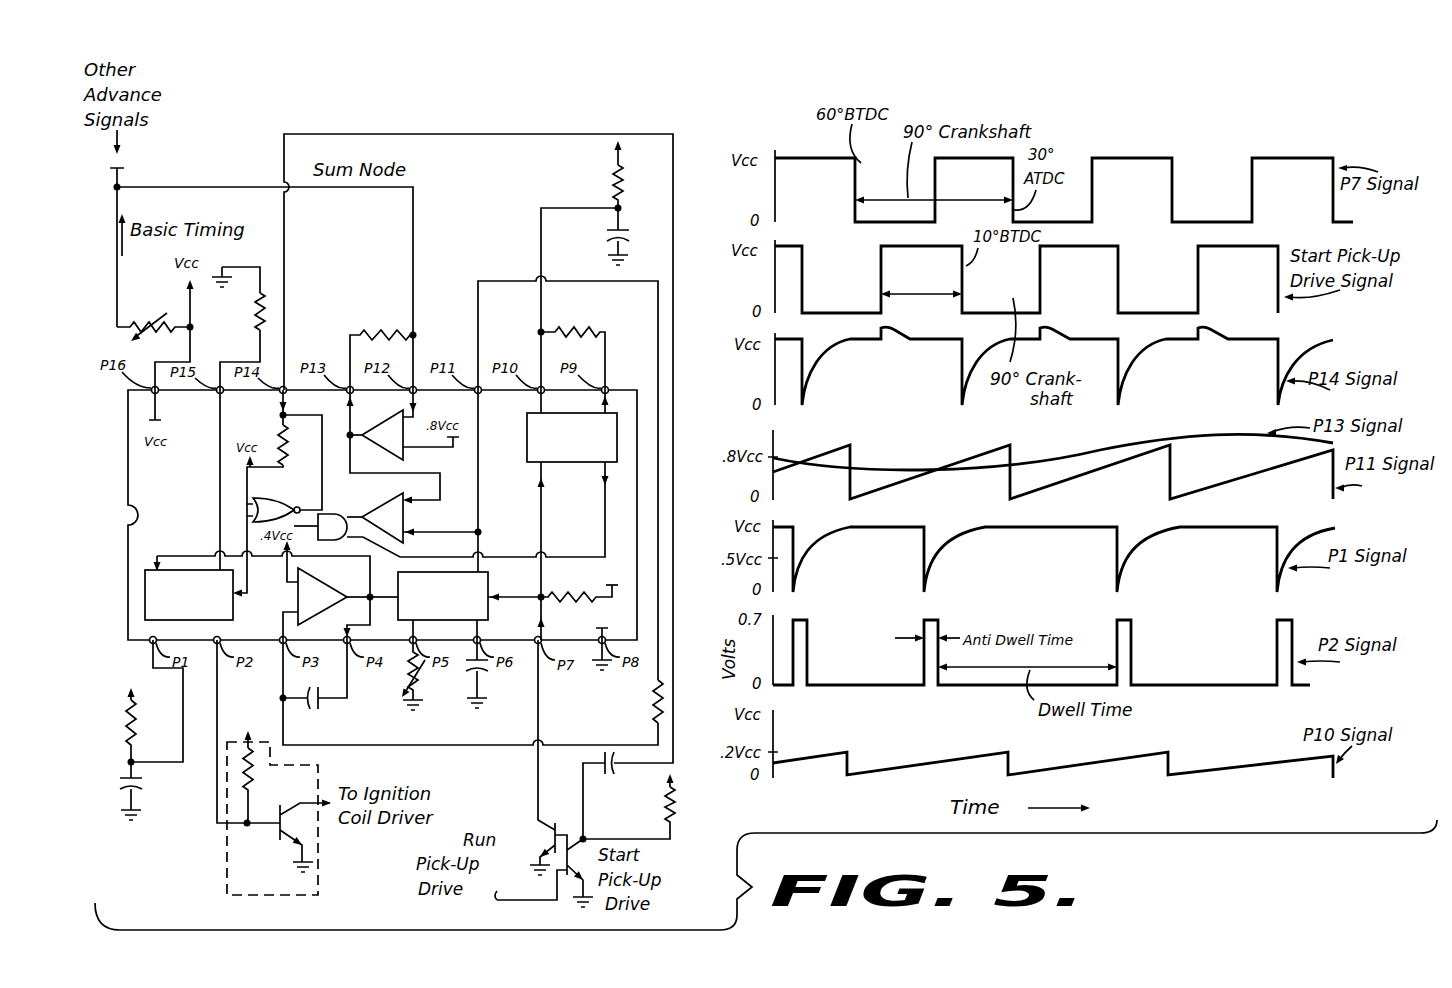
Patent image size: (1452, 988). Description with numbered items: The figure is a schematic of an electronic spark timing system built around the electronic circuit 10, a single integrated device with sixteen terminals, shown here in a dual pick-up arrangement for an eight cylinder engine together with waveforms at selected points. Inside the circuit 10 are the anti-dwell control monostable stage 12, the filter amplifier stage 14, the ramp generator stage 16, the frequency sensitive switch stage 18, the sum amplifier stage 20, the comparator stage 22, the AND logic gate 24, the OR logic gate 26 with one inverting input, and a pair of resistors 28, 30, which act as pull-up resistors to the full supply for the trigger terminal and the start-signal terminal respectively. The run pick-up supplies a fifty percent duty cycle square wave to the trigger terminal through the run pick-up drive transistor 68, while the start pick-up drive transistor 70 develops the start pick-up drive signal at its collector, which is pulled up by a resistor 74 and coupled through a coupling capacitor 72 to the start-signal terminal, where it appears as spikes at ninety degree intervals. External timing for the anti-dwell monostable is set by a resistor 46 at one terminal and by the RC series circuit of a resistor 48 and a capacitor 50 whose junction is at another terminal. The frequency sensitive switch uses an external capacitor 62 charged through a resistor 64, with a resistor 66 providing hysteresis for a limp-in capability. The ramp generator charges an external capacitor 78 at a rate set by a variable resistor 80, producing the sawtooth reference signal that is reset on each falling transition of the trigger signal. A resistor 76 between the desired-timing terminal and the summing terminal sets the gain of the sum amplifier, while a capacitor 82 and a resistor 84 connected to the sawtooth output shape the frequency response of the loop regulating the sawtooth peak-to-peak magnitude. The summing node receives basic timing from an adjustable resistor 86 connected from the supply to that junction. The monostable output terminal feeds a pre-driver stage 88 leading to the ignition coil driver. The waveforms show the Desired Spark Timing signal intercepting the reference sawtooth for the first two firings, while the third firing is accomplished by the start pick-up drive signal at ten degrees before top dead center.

The electronic circuit 10 is at (124, 424).
The anti-dwell control monostable stage 12 is at (233, 612).
The filter amplifier stage 14 is at (324, 586).
The ramp generator stage 16 is at (490, 586).
The frequency sensitive switch stage 18 is at (577, 463).
The sum amplifier stage 20 is at (385, 417).
The comparator stage 22 is at (405, 519).
The AND logic gate 24 is at (350, 502).
The OR logic gate 26 is at (286, 500).
The resistor 28 is at (580, 606).
The resistor 30 is at (279, 433).
The resistor 46 is at (256, 320).
The resistor 48 is at (126, 727).
The capacitor 50 is at (143, 787).
The capacitor 62 is at (606, 235).
The resistor 64 is at (614, 181).
The resistor 66 is at (573, 327).
The run pick-up drive transistor 68 is at (556, 825).
The start pick-up drive transistor 70 is at (566, 893).
The coupling capacitor 72 is at (609, 773).
The resistor 74 is at (676, 807).
The resistor 76 is at (398, 328).
The capacitor 78 is at (488, 673).
The variable resistor 80 is at (418, 686).
The capacitor 82 is at (313, 711).
The resistor 84 is at (652, 704).
The adjustable resistor 86 is at (137, 326).
The pre-driver stage 88 is at (225, 881).